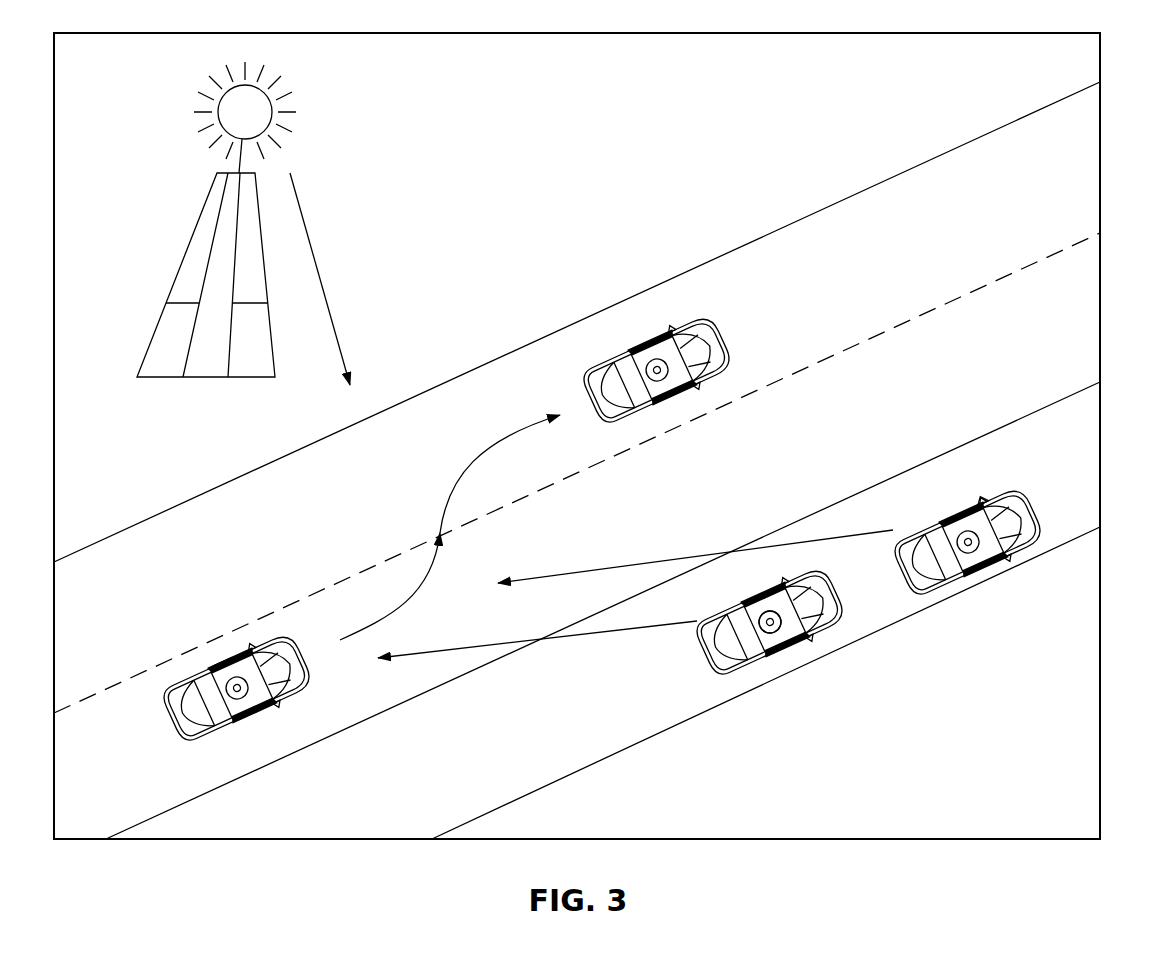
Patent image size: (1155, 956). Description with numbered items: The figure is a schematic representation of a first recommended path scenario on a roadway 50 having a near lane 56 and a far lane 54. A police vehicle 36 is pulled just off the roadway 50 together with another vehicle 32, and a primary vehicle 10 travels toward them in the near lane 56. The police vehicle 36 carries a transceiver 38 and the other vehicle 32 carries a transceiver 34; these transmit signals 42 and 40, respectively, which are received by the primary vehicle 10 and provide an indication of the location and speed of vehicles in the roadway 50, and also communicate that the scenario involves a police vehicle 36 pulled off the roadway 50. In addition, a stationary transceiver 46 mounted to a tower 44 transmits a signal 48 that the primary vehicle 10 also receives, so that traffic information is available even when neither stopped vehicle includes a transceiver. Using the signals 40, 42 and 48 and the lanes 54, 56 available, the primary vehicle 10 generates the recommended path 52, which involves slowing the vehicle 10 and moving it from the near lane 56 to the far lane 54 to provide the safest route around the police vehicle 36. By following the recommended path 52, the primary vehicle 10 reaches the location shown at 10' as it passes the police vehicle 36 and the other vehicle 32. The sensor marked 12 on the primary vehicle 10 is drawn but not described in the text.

The primary vehicle 10 is at (237, 722).
The primary vehicle location 10' is at (657, 332).
The vehicle sensor 12 is at (220, 673).
The other vehicle 32 is at (985, 570).
The transceiver 34 is at (973, 502).
The police vehicle 36 is at (743, 653).
The transceiver 38 is at (770, 632).
The signal 40 is at (682, 557).
The signal 42 is at (603, 640).
The tower 44 is at (203, 257).
The stationary transceiver 46 is at (237, 167).
The signal 48 is at (323, 283).
The roadway 50 is at (467, 675).
The recommended path 52 is at (457, 503).
The far lane 54 is at (927, 233).
The near lane 56 is at (1043, 323).